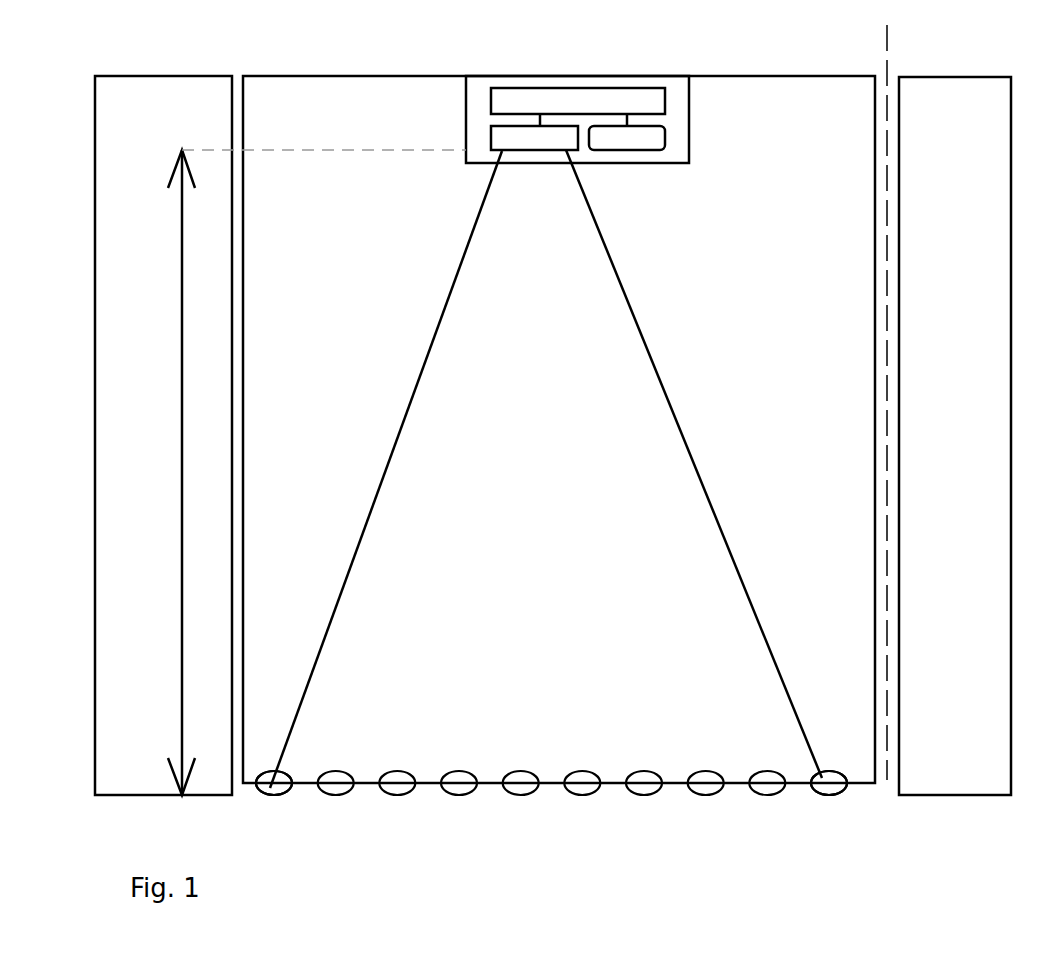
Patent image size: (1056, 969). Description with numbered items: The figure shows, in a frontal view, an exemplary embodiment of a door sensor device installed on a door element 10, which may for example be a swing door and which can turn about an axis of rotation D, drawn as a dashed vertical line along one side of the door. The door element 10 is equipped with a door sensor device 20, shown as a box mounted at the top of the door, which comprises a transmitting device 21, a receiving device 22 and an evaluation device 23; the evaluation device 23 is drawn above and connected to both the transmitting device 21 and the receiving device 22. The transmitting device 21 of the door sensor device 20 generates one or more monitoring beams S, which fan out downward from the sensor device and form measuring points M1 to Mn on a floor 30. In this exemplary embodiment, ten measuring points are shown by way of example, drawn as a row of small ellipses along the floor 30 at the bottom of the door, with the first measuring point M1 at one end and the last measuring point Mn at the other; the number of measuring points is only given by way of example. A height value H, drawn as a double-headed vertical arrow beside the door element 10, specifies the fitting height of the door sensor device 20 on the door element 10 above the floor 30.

The door element 10 is at (292, 75).
The door sensor device 20 is at (689, 114).
The transmitting device 21 is at (539, 138).
The receiving device 22 is at (627, 137).
The evaluation device 23 is at (528, 102).
The floor 30 is at (613, 807).
The height value H is at (311, 472).
The axis of rotation D is at (887, 63).
The monitoring beam S is at (650, 348).
The measuring point Mn is at (290, 770).
The measuring point M1 is at (815, 772).